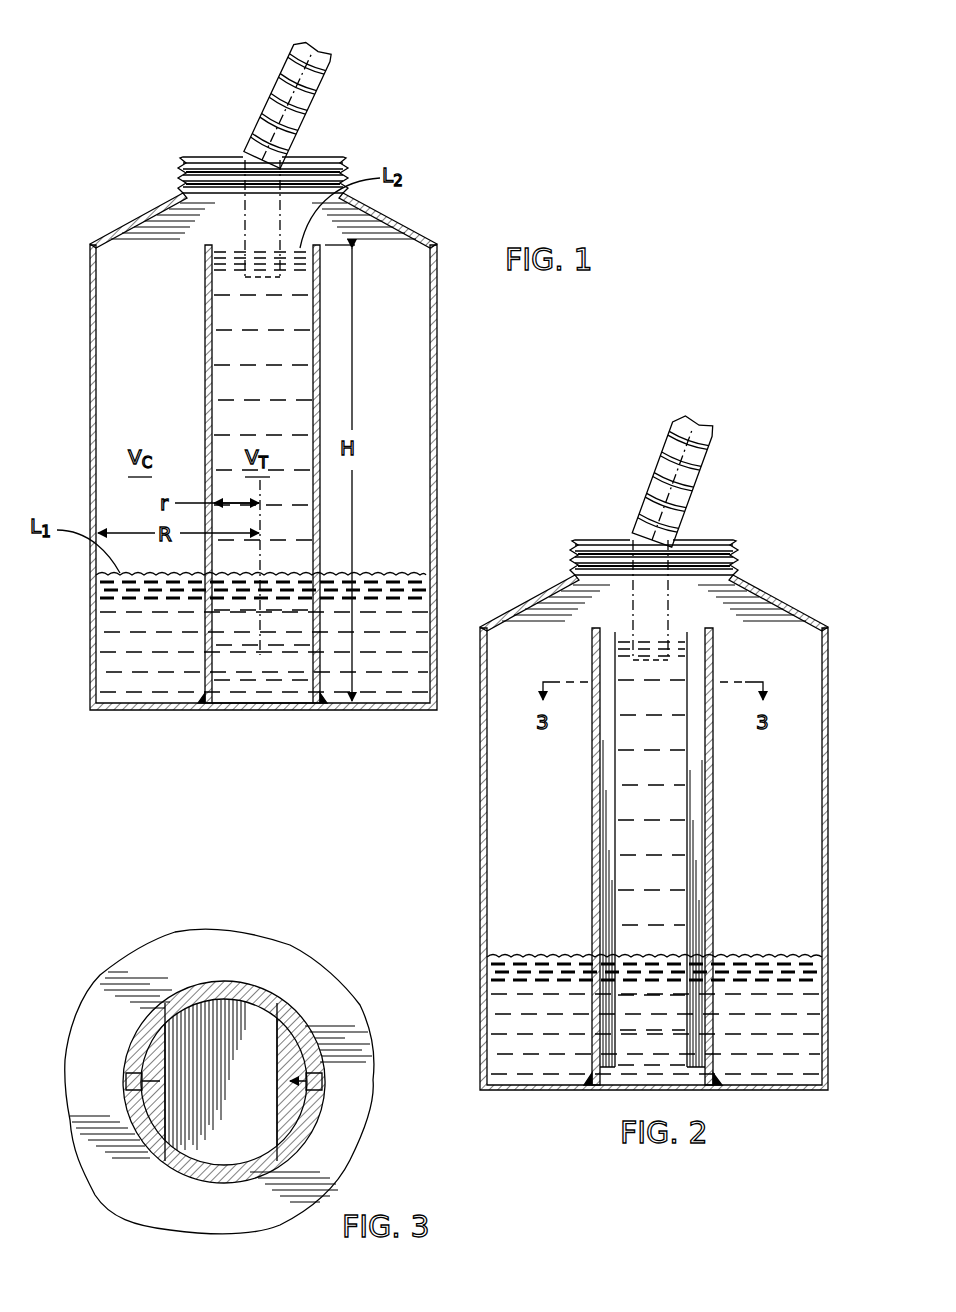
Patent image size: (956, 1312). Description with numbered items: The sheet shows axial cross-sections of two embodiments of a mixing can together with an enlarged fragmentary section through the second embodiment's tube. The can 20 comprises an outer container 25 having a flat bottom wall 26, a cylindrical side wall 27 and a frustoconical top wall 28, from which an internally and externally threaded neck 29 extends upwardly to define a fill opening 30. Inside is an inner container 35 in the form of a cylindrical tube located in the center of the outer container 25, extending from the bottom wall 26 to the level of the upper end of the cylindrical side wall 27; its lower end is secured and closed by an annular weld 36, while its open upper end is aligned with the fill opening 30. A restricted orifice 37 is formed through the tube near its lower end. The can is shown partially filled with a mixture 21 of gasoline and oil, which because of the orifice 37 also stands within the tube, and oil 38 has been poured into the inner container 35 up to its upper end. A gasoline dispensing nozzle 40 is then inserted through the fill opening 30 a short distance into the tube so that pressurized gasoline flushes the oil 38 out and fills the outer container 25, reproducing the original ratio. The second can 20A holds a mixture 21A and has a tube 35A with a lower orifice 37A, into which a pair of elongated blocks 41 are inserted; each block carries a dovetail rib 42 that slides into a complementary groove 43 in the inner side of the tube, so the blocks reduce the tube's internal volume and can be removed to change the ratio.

In FIG. 1, the can 20 is at (295, 470).
In FIG. 2, the can 20A is at (834, 640).
In FIG. 3, the can 20A is at (342, 982).
In FIG. 1, the mixture 21 is at (396, 582).
In FIG. 2, the mixture 21A is at (767, 965).
In FIG. 1, the outer container 25 is at (441, 430).
In FIG. 1, the bottom wall 26 is at (127, 711).
In FIG. 1, the cylindrical side wall 27 is at (438, 484).
In FIG. 1, the top wall 28 is at (396, 222).
In FIG. 1, the neck 29 is at (344, 168).
In FIG. 1, the fill opening 30 is at (208, 166).
In FIG. 1, the inner container 35 is at (204, 432).
In FIG. 2, the tube 35A is at (718, 812).
In FIG. 3, the tube 35A is at (300, 1022).
In FIG. 1, the annular weld 36 is at (324, 702).
In FIG. 1, the restricted orifice 37 is at (200, 702).
In FIG. 2, the lower orifice 37A is at (590, 1083).
In FIG. 1, the oil 38 is at (248, 385).
In FIG. 1, the gasoline dispensing nozzle 40 is at (258, 112).
In FIG. 2, the elongated blocks 41 is at (692, 866).
In FIG. 3, the elongated blocks 41 is at (152, 1065).
In FIG. 2, the dovetail rib 42 is at (599, 785).
In FIG. 3, the dovetail rib 42 is at (304, 1086).
In FIG. 3, the groove 43 is at (286, 1100).